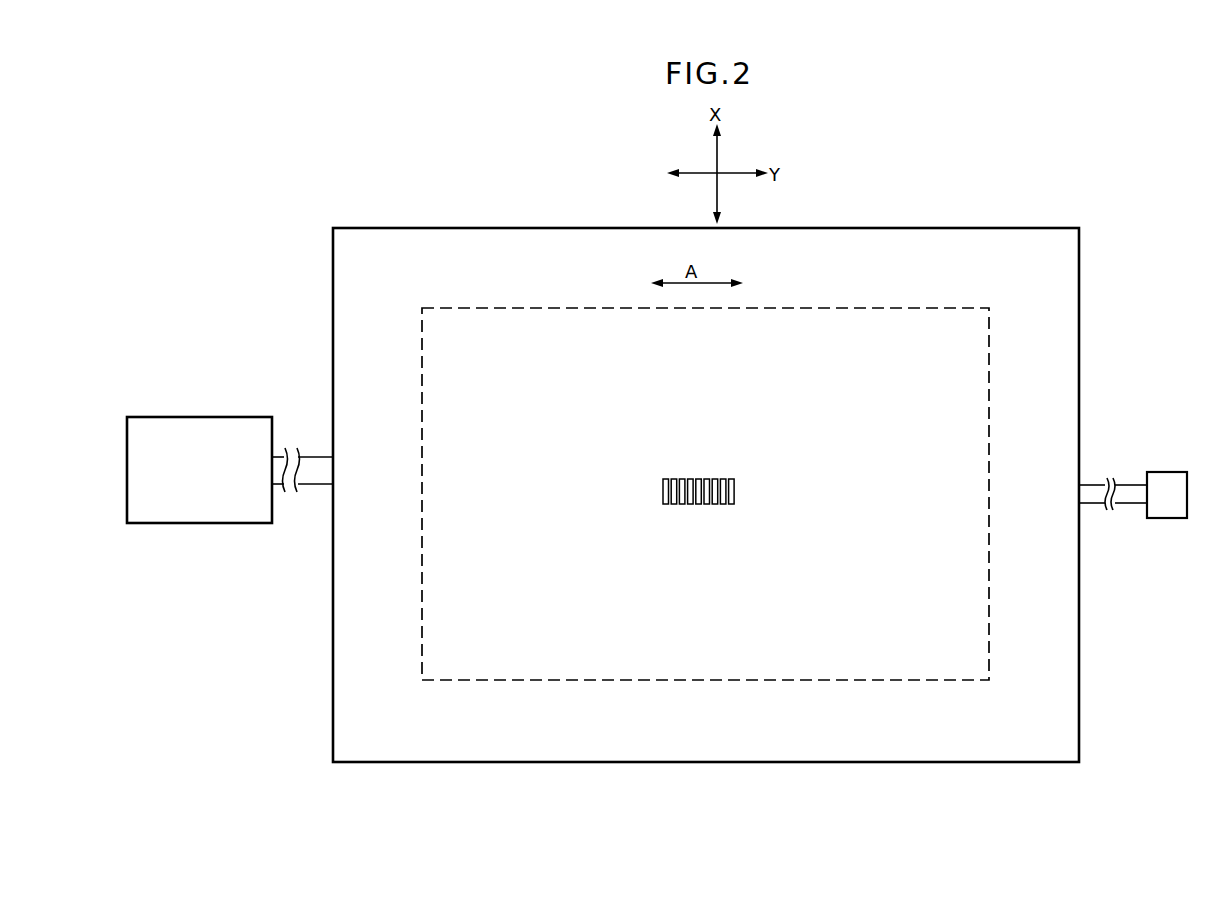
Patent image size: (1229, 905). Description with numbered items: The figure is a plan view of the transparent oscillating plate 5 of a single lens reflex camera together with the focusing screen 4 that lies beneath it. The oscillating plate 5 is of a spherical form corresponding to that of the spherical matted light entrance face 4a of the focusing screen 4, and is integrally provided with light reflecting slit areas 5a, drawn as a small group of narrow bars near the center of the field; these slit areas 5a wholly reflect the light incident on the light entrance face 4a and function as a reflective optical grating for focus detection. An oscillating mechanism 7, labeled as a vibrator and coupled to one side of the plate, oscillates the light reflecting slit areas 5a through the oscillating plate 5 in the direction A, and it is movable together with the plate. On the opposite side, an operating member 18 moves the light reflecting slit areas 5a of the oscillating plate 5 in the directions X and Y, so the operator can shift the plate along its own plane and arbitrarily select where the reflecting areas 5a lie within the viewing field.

The transparent oscillating plate 5 is at (1080, 270).
The focusing screen 4 is at (990, 366).
The light entrance face 4a is at (823, 322).
The light reflecting slit areas 5a is at (730, 476).
The oscillating mechanism 7 is at (226, 417).
The operating member 18 is at (1175, 518).